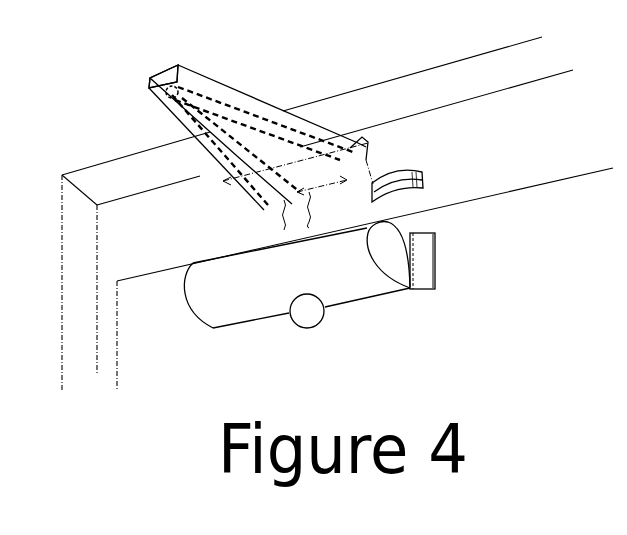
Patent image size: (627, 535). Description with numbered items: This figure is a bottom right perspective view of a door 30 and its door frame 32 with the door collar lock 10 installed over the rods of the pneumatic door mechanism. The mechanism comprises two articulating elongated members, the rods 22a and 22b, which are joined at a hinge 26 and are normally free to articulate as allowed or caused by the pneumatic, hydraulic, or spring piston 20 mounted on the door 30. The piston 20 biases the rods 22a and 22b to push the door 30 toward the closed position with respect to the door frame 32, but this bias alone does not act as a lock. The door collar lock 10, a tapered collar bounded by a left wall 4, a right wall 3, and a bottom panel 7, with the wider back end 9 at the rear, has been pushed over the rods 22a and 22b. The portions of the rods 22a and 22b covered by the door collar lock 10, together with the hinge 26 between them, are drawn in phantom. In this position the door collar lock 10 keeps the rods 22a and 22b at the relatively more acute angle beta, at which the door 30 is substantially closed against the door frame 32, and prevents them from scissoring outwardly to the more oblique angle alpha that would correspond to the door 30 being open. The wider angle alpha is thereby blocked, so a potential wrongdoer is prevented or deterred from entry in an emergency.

The right wall 3 is at (197, 178).
The left wall 4 is at (233, 92).
The bottom panel 7 is at (209, 152).
The back end 9 is at (147, 47).
The door collar lock 10 is at (268, 128).
The piston 20 is at (344, 284).
The rod 22a is at (278, 197).
The rod 22b is at (285, 137).
The hinge 26 is at (168, 91).
The door 30 is at (528, 311).
The door frame 32 is at (528, 157).